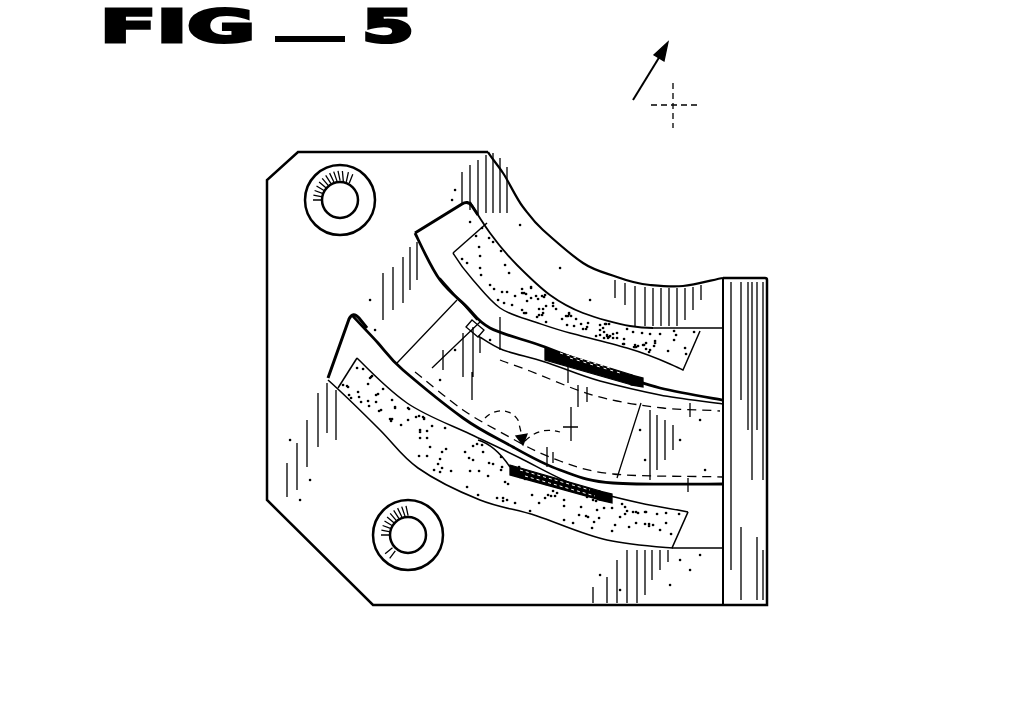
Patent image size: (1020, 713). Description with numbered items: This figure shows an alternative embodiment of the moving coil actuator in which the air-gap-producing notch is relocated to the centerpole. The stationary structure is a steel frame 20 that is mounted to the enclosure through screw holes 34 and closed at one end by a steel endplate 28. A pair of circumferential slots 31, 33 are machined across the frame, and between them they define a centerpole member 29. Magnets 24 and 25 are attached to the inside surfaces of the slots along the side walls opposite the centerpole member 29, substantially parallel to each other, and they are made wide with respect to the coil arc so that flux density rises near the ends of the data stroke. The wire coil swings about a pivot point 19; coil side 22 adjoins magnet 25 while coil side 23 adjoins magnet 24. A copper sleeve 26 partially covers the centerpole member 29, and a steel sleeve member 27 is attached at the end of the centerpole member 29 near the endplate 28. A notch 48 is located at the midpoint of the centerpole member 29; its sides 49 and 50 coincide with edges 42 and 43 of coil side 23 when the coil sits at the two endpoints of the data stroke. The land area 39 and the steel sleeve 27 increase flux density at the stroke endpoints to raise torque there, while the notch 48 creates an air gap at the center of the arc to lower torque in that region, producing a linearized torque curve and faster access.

The pivot point 19 is at (676, 107).
The steel frame 20 is at (266, 268).
The coil side 22 is at (607, 368).
The coil side 23 is at (582, 500).
The magnet 24 is at (537, 514).
The magnet 25 is at (571, 325).
The copper sleeve 26 is at (390, 418).
The steel sleeve member 27 is at (703, 458).
The steel endplate 28 is at (768, 403).
The centerpole member 29 is at (515, 275).
The slot 31 is at (384, 364).
The slot 33 is at (653, 381).
The screw holes 34 is at (350, 188).
The land area 39 is at (445, 232).
The edge of coil side 42 is at (478, 445).
The edge of coil side 43 is at (612, 497).
The notch 48 is at (512, 416).
The side of notch 49 is at (587, 425).
The side of notch 50 is at (484, 421).